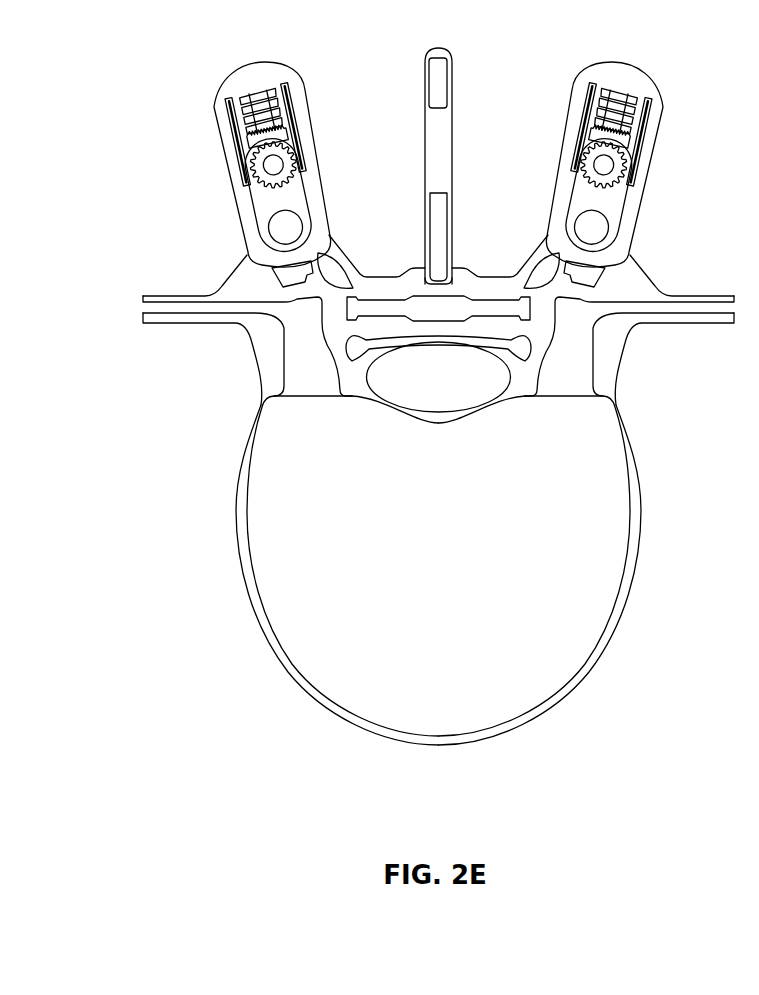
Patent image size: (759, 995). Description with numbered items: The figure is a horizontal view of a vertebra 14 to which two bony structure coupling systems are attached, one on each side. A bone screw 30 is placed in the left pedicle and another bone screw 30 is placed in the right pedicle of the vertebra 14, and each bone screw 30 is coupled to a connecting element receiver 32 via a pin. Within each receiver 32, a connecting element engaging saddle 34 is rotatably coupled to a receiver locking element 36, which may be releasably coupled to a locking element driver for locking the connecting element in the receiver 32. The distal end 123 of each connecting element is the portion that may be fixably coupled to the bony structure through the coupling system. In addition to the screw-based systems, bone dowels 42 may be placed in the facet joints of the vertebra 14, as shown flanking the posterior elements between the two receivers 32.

The bony structure 14 is at (303, 657).
The bone screw 30 is at (268, 268).
The receiver 32 is at (213, 100).
The connecting element engaging saddle 34 is at (582, 127).
The receiver locking element 36 is at (258, 89).
The bone dowel 42 is at (340, 268).
The distal end 123 is at (247, 172).